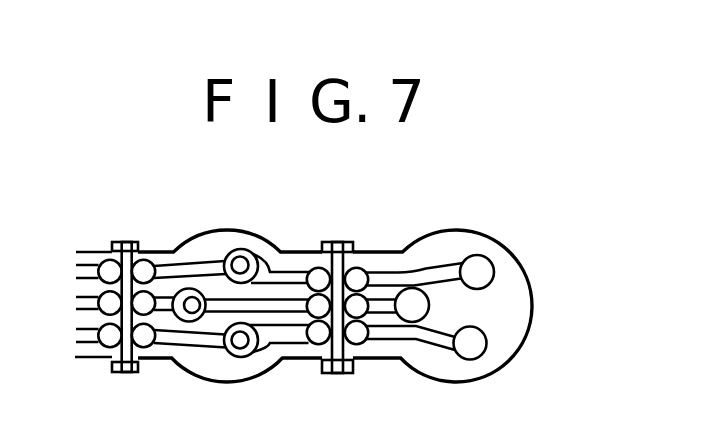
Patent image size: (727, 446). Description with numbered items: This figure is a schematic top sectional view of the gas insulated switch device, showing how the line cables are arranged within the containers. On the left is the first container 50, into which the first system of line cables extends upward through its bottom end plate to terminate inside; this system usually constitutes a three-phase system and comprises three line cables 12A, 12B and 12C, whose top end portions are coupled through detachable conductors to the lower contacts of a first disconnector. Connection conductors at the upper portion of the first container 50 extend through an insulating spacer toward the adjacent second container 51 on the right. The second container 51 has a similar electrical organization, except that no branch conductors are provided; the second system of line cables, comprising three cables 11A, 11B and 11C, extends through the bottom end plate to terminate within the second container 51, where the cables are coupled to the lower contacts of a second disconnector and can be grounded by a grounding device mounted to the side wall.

The first container 50 is at (224, 383).
The second container 51 is at (447, 382).
The line cable 12A is at (176, 292).
The line cable 12B is at (254, 353).
The line cable 12C is at (255, 255).
The line cable 11A is at (410, 288).
The line cable 11B is at (486, 346).
The line cable 11C is at (494, 268).